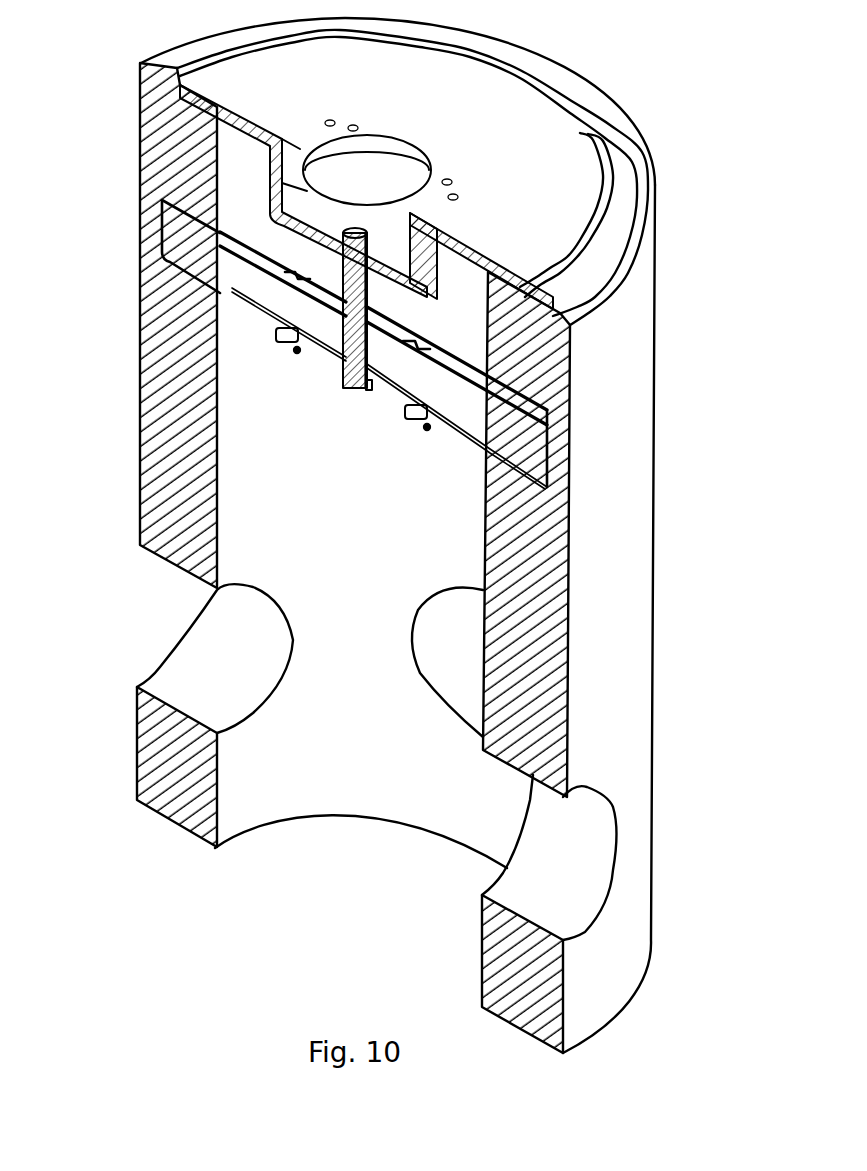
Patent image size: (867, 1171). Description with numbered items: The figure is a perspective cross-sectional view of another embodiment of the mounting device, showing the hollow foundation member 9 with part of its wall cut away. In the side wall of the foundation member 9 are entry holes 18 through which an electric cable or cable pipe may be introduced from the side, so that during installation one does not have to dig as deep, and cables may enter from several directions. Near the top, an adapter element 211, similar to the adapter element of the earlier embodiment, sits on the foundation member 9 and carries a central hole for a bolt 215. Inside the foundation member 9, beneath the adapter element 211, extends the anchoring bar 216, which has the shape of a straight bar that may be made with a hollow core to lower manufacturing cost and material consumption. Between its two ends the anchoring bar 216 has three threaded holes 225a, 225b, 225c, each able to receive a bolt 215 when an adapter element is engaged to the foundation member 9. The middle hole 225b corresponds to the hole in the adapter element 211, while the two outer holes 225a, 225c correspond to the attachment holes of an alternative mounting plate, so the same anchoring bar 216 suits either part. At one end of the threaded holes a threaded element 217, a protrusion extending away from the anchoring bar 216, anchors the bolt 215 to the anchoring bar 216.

The foundation member 9 is at (657, 620).
The entry holes 18 is at (183, 682).
The adapter element 211 is at (562, 145).
The bolt 215 is at (348, 393).
The anchoring bar 216 is at (490, 383).
The threaded element 217 is at (427, 430).
The hole 225a is at (420, 417).
The hole 225b is at (362, 390).
The hole 225c is at (295, 352).